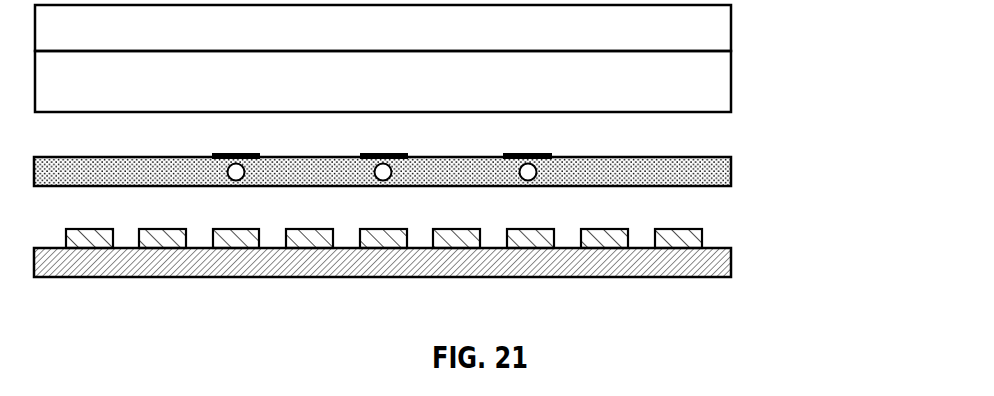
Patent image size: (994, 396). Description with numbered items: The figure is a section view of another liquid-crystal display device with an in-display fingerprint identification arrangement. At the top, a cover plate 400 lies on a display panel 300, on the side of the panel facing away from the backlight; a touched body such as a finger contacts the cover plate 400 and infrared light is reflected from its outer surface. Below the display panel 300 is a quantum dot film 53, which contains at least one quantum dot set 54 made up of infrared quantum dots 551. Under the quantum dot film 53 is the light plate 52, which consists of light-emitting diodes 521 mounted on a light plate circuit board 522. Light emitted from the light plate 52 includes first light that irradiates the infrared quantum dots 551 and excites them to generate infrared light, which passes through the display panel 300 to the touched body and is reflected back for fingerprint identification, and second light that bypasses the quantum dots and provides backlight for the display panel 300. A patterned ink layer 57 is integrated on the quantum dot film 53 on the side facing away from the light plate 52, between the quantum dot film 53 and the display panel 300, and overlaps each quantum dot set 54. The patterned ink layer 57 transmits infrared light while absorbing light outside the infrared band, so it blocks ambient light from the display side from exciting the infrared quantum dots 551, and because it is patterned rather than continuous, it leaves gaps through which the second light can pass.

The cover plate 400 is at (731, 26).
The display panel 300 is at (731, 82).
The patterned ink layer 57 is at (520, 153).
The quantum dot film 53 is at (731, 182).
The quantum dot set 54 is at (382, 172).
The infrared quantum dots 551 is at (530, 172).
The light plate 52 is at (455, 268).
The light-emitting diodes 521 is at (702, 233).
The light plate circuit board 522 is at (731, 270).